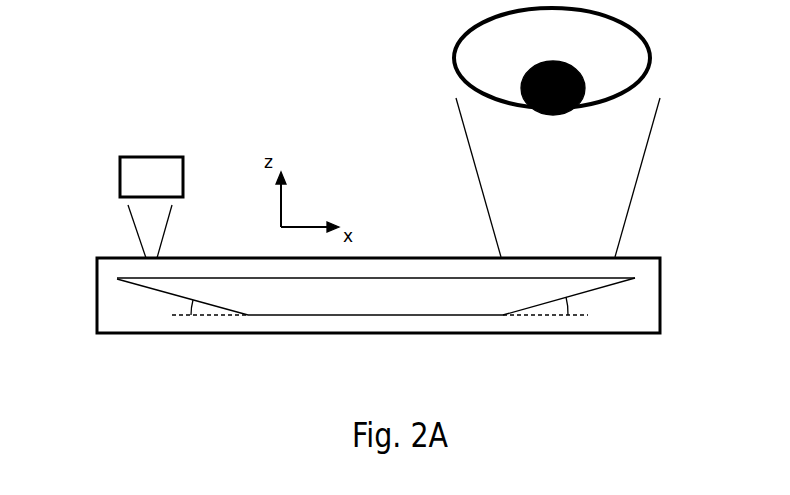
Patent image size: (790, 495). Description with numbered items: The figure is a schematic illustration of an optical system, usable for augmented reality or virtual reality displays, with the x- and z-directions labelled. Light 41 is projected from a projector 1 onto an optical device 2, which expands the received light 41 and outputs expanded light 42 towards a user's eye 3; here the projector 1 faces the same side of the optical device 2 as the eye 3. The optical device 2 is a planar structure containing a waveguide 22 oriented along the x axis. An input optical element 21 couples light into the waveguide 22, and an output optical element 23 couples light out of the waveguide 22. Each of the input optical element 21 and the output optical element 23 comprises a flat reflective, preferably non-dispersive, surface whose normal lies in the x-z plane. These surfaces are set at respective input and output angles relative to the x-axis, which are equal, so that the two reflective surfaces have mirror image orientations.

The projector 1 is at (102, 173).
The optical device 2 is at (90, 297).
The eye 3 is at (660, 58).
The input optical element 21 is at (157, 292).
The waveguide 22 is at (363, 303).
The output optical element 23 is at (603, 287).
The light 41 is at (157, 218).
The expanded light 42 is at (615, 205).